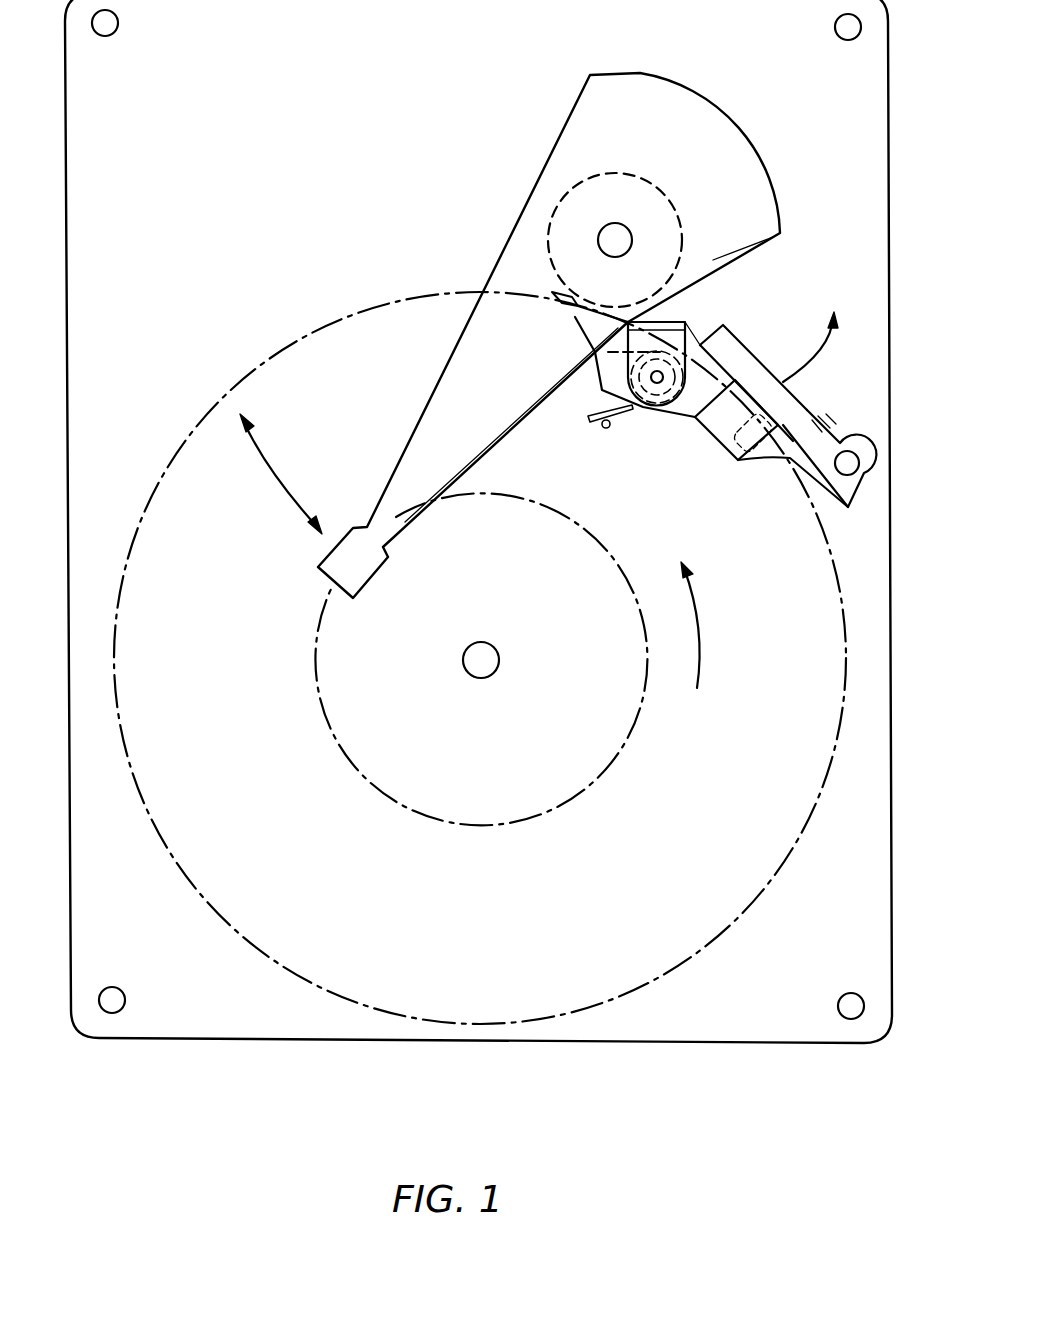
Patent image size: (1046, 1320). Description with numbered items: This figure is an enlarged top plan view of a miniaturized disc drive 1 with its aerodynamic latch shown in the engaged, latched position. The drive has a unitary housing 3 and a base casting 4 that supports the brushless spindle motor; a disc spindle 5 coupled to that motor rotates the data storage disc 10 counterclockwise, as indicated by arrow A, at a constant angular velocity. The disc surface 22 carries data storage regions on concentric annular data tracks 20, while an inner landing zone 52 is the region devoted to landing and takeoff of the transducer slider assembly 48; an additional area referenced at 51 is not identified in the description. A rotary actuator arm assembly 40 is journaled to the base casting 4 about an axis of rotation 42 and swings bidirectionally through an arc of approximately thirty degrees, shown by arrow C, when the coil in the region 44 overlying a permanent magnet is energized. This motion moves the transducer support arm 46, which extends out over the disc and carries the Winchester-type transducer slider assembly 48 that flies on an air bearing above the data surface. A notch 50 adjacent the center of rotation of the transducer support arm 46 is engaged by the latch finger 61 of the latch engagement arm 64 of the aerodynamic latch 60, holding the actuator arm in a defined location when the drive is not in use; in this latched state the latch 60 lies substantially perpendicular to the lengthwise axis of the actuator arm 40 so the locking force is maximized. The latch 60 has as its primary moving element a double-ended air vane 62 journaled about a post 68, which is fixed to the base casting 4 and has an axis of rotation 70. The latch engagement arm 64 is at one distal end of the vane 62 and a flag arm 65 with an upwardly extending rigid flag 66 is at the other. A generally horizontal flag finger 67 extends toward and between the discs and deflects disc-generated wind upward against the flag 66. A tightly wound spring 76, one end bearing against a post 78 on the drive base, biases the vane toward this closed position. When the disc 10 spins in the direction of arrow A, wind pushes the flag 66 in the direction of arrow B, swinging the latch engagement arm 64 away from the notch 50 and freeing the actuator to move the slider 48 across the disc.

The miniaturized disc drive 1 is at (898, 86).
The unitary housing 3 is at (890, 162).
The base casting 4 is at (478, 514).
The disc spindle 5 is at (490, 673).
The data storage disc 10 is at (480, 658).
The data tracks 20 is at (679, 850).
The disc surface 22 is at (795, 677).
The rotary actuator arm assembly 40 is at (525, 322).
The axis of rotation 42 is at (608, 235).
The coil and permanent magnet region 44 is at (717, 143).
The transducer support arm 46 is at (450, 418).
The transducer slider assembly 48 is at (345, 553).
The notch 50 is at (590, 310).
The disk inner region 51 is at (209, 695).
The inner landing zone 52 is at (337, 742).
The aerodynamic latch 60 is at (687, 379).
The latch finger 61 is at (572, 310).
The double-ended air vane 62 is at (737, 337).
The latch engagement arm 64 is at (597, 372).
The flag arm 65 is at (746, 393).
The flag 66 is at (790, 415).
The flag finger 67 is at (767, 452).
The post 68 is at (660, 352).
The axis of rotation 70 is at (657, 382).
The spring 76 is at (636, 414).
The post 78 is at (605, 430).
The arrow A is at (705, 628).
The arrow B is at (813, 350).
The arrow C is at (275, 470).